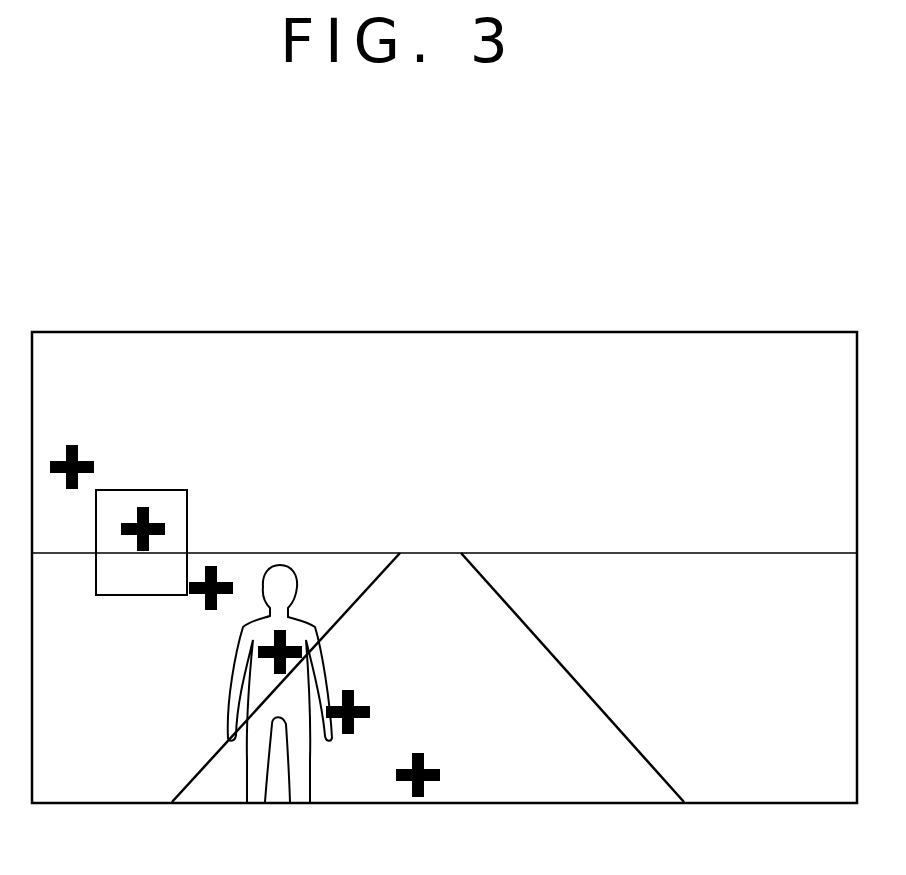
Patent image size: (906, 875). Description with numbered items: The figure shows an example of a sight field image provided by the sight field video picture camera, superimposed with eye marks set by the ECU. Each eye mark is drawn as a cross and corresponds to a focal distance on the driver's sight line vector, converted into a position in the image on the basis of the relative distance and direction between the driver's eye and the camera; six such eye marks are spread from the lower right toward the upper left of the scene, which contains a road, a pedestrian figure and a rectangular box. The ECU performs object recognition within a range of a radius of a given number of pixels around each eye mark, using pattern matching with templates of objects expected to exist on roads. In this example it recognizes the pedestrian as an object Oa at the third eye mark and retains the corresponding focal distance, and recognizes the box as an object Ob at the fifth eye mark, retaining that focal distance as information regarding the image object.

The object Oa is at (231, 674).
The object Ob is at (117, 595).